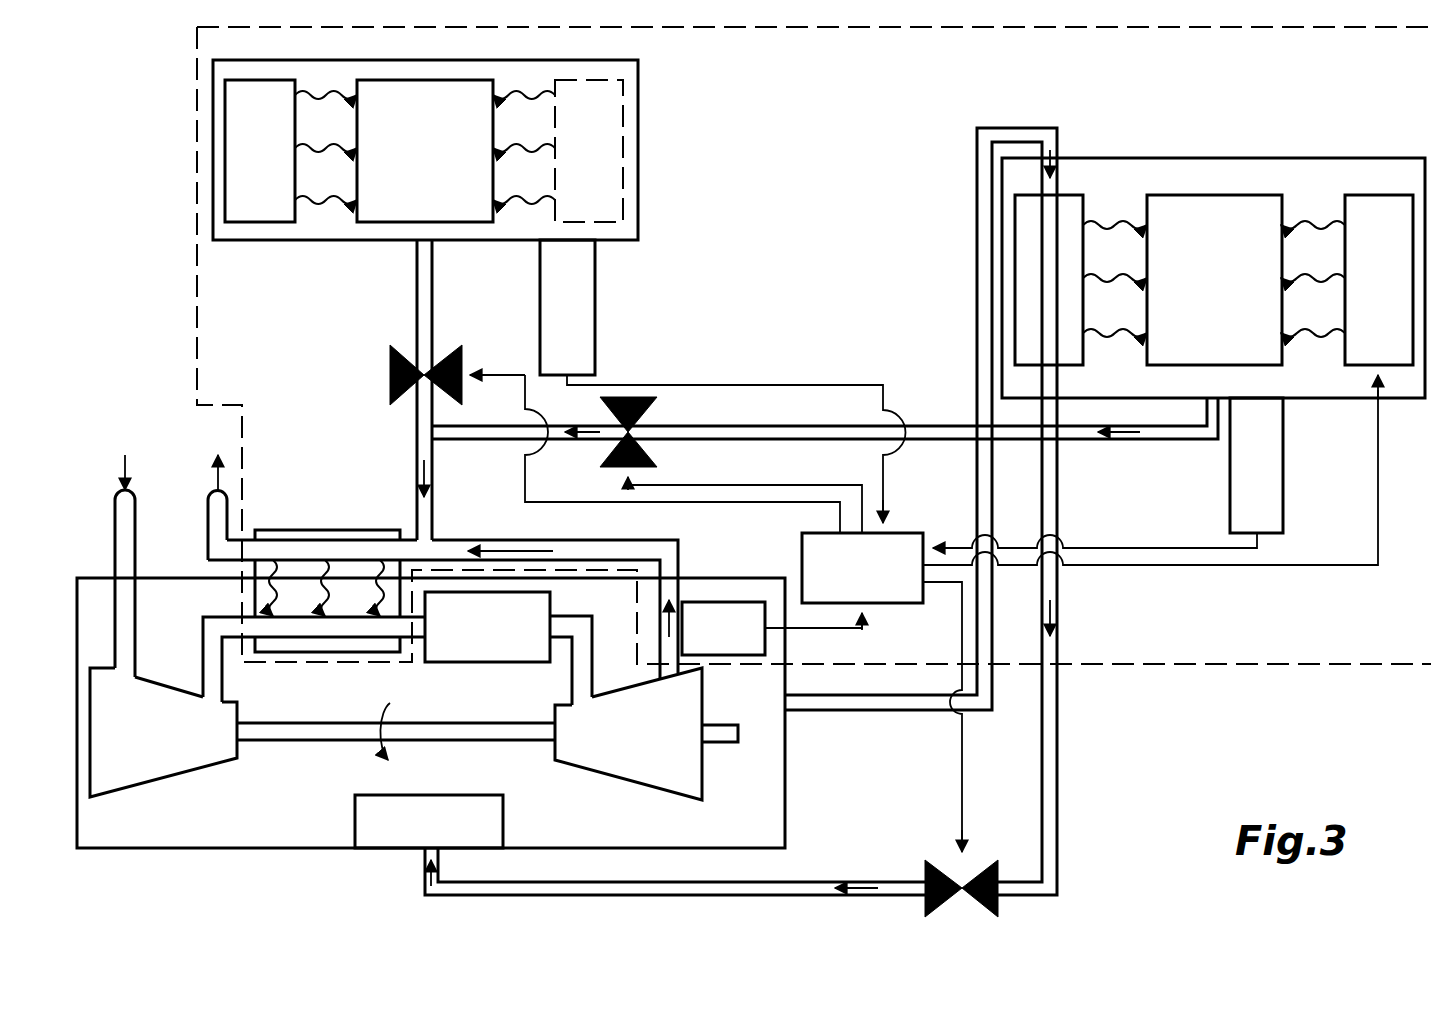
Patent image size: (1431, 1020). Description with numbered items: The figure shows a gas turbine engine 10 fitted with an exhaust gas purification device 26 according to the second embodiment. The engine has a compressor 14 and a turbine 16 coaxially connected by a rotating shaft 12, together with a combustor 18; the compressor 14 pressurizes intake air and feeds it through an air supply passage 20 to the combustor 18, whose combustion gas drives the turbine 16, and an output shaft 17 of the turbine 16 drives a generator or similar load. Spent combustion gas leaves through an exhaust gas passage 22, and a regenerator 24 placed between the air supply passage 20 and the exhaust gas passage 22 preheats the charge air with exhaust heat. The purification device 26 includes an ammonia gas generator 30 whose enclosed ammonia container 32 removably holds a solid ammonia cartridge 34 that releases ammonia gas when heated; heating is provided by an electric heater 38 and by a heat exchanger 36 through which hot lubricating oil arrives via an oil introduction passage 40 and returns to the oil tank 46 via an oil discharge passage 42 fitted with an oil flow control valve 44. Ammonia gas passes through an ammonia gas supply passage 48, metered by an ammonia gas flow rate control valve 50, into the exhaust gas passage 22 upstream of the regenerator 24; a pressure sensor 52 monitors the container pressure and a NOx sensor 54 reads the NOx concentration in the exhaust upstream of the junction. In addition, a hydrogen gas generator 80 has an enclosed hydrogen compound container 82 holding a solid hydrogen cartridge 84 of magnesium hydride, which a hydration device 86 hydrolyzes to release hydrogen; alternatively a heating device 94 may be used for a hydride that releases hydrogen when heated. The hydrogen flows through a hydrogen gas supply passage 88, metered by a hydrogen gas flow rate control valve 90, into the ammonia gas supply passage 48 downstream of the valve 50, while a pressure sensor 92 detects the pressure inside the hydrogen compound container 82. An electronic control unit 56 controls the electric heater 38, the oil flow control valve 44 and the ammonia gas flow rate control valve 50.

The gas turbine engine 10 is at (260, 852).
The rotating shaft 12 is at (445, 723).
The compressor 14 is at (170, 777).
The turbine 16 is at (615, 780).
The output shaft 17 is at (715, 742).
The combustor 18 is at (492, 662).
The air supply passage 20 is at (213, 678).
The exhaust gas passage 22 is at (680, 563).
The regenerator 24 is at (265, 530).
The exhaust gas purification device 26 is at (193, 94).
The NH3 gas generator 30 is at (1314, 152).
The NH3 container 32 is at (1338, 158).
The solid NH3 cartridge 34 is at (1262, 365).
The heat exchanger 36 is at (1072, 365).
The electric heater 38 is at (1358, 195).
The oil introduction passage 40 is at (977, 290).
The oil discharge passage 42 is at (1058, 768).
The oil flow control valve 44 is at (940, 862).
The oil tank 46 is at (503, 820).
The NH3 gas supply passage 48 is at (737, 426).
The NH3 gas flow rate control valve 50 is at (657, 462).
The pressure sensor 52 is at (1283, 480).
The NOx sensor 54 is at (725, 655).
The electronic control unit (ECU) 56 is at (900, 603).
The H2 gas generator 80 is at (659, 88).
The hydrogen compound container 82 is at (639, 214).
The solid H2 cartridge 84 is at (393, 222).
The hydration device 86 is at (258, 222).
The hydrogen gas supply passage 88 is at (432, 315).
The H2 gas flow rate control valve 90 is at (388, 375).
The H2 pressure sensor 92 is at (595, 325).
The heating device 94 is at (623, 152).